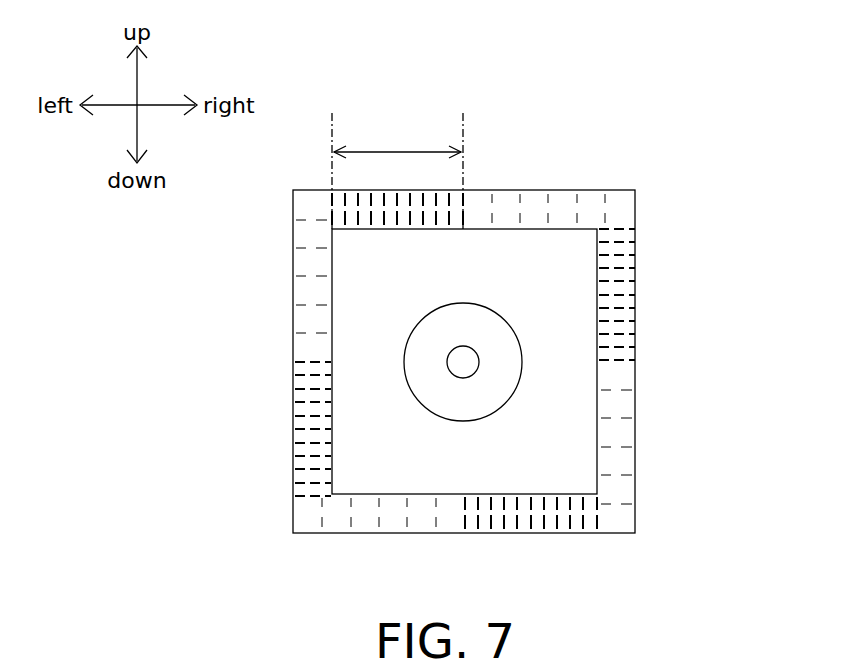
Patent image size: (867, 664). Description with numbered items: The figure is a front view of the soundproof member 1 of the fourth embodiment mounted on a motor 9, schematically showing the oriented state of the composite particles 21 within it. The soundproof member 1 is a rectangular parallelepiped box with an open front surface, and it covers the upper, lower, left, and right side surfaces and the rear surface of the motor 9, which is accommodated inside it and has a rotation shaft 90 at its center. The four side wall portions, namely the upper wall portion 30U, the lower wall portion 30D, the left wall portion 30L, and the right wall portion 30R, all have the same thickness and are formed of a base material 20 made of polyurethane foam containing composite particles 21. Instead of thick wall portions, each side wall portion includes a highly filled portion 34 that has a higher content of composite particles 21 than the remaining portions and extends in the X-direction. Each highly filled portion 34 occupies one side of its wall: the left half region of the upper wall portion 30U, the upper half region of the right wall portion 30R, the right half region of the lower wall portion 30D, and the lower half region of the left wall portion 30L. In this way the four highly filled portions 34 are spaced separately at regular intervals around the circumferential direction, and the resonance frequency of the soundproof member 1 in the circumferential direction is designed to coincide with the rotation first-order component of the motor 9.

The soundproof member 1 is at (597, 196).
The motor 9 is at (362, 315).
The rotation shaft 90 is at (461, 362).
The base material 20 is at (621, 290).
The composite particles 21 is at (628, 358).
The upper wall portion 30U is at (505, 197).
The lower wall portion 30D is at (450, 518).
The left wall portion 30L is at (313, 290).
The right wall portion 30R is at (681, 366).
The highly filled portion 34 is at (397, 152).